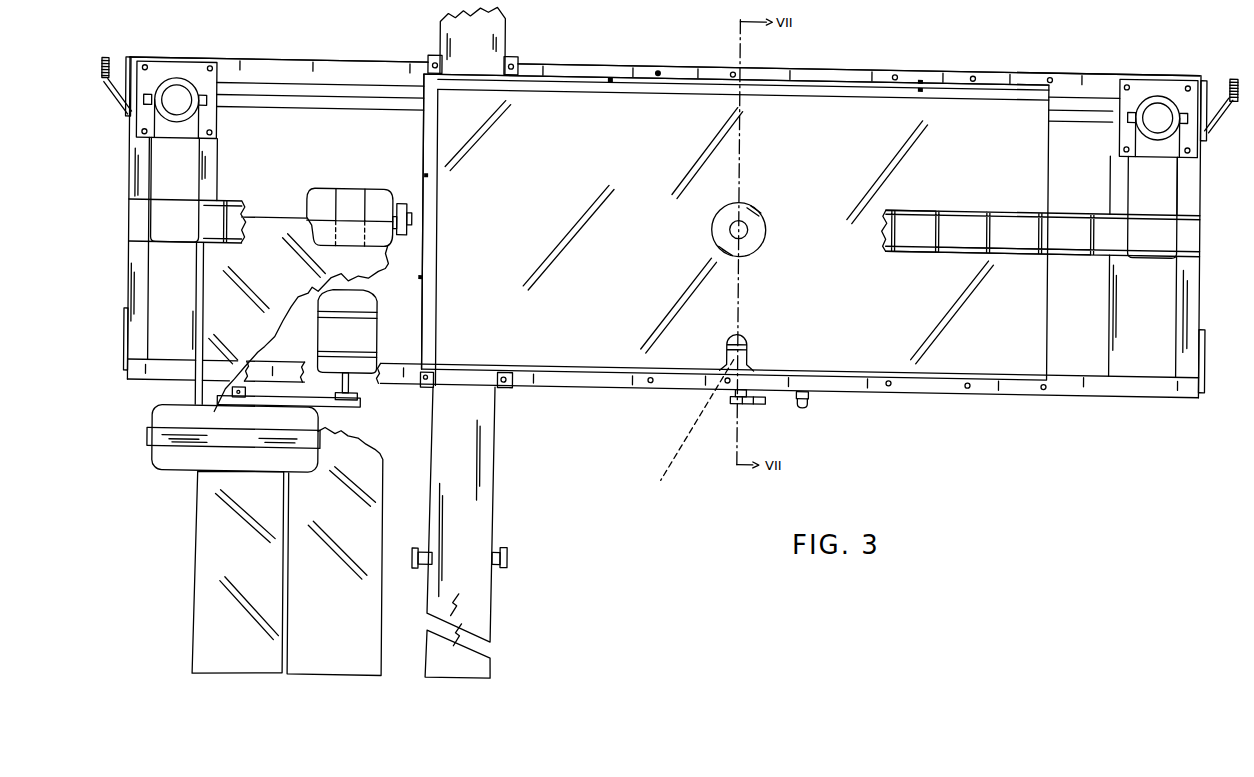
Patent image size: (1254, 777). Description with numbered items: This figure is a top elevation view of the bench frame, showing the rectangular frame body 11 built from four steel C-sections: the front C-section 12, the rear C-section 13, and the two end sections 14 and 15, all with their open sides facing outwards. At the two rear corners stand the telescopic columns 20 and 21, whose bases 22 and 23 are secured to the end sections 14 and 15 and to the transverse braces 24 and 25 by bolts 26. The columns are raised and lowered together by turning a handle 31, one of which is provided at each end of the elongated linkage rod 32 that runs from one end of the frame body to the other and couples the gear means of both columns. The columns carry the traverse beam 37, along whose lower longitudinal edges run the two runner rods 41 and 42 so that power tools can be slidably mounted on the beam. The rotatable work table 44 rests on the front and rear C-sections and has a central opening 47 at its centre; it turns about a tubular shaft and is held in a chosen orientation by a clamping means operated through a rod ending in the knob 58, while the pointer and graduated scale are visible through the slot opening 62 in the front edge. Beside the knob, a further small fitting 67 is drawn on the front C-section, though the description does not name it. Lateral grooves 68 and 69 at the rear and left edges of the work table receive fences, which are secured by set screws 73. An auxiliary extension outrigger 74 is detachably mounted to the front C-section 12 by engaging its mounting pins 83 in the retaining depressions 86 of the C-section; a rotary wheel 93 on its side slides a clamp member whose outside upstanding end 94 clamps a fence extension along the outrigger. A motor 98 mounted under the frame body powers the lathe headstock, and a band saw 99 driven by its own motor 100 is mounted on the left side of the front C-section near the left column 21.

The rectangular frame body 11 is at (401, 50).
The front C-section 12 is at (167, 373).
The rear C-section 13 is at (345, 56).
The end C-section 14 is at (1197, 295).
The end C-section 15 is at (128, 258).
The telescopic column 20 is at (1138, 122).
The telescopic column 21 is at (199, 88).
The base 22 is at (1148, 81).
The base 23 is at (190, 70).
The transverse brace 24 is at (1110, 302).
The transverse brace 25 is at (198, 287).
The bolts 26 is at (144, 64).
The handle 31 is at (103, 78).
The elongated linkage rod 32 is at (347, 108).
The traverse beam 37 is at (237, 212).
The runner rod 41 is at (930, 209).
The runner rod 42 is at (1027, 254).
The rotatable work table 44 is at (850, 111).
The central opening 47 is at (758, 217).
The knob 58 is at (755, 404).
The slot opening 62 is at (749, 363).
The bolt 67 is at (815, 401).
The lateral groove 68 is at (687, 91).
The lateral groove 69 is at (432, 230).
The set screws 73 is at (425, 175).
The auxiliary extension outrigger 74 is at (500, 48).
The mounting pins 83 is at (506, 381).
The retaining depressions 86 is at (731, 70).
The rotary wheel 93 is at (511, 551).
The outside upstanding end 94 is at (414, 563).
The motor 98 is at (352, 194).
The band saw 99 is at (377, 330).
The motor 100 is at (207, 562).